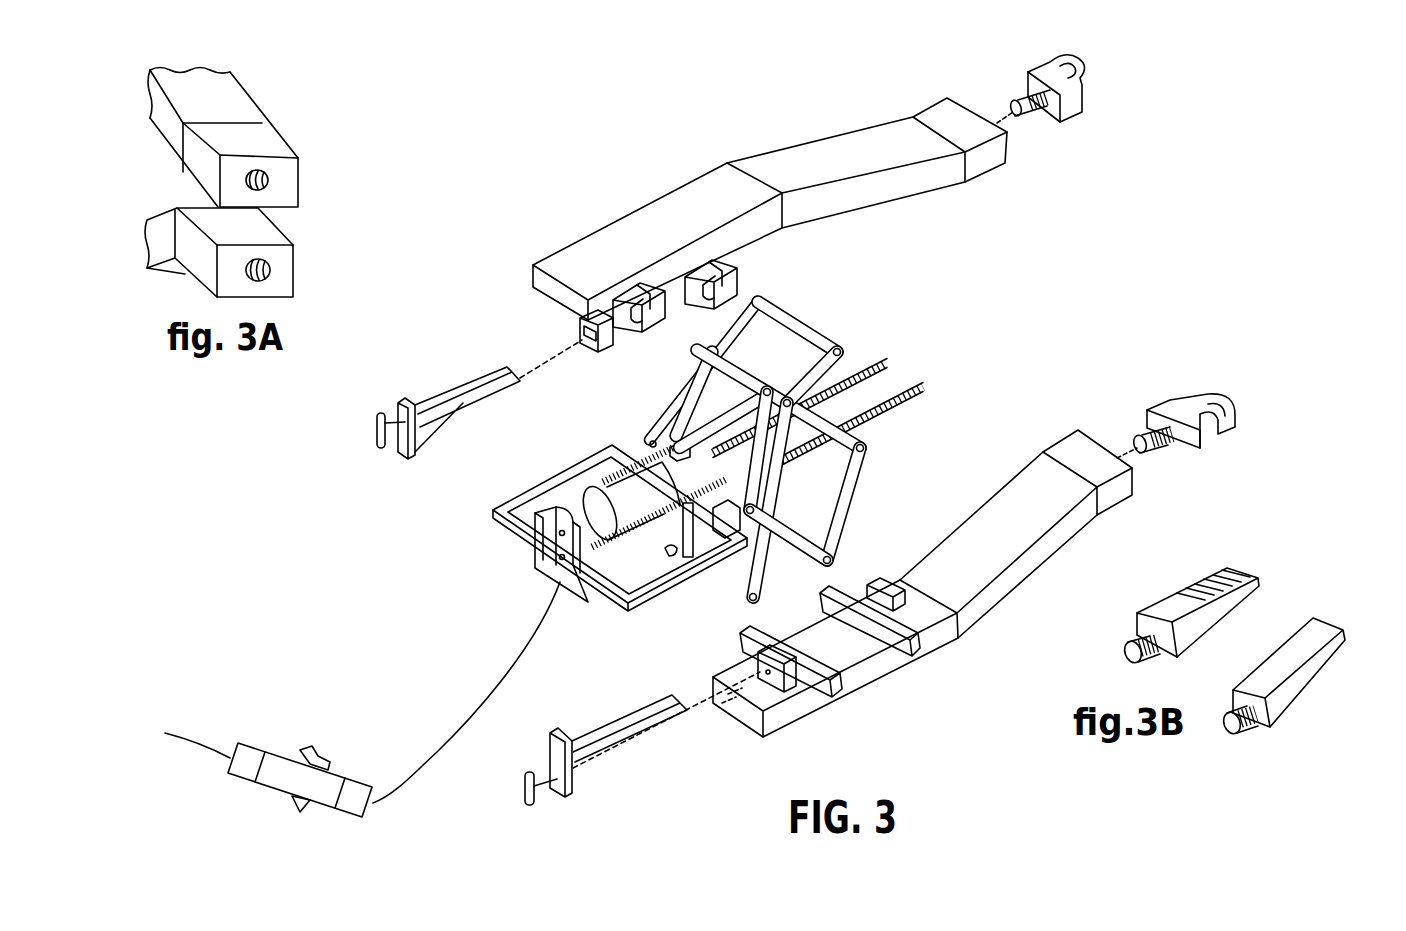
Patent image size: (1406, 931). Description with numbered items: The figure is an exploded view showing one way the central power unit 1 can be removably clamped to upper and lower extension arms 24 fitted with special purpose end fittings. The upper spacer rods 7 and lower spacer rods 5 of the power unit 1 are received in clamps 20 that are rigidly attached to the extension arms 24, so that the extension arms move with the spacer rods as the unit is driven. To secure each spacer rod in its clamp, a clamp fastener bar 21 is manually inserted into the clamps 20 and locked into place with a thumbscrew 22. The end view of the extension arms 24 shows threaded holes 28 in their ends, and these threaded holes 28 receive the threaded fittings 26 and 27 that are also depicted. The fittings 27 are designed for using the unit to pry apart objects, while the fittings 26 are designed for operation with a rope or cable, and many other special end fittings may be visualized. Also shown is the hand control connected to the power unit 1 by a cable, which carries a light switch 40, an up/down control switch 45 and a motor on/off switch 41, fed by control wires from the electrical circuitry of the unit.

In FIG. 3, the power unit 1 is at (507, 553).
In FIG. 3, the lower spacer rods 5 is at (722, 562).
In FIG. 3, the upper spacer rods 7 is at (810, 337).
In FIG. 3, the clamps 20 is at (625, 314).
In FIG. 3, the clamp fastener bars 21 is at (413, 453).
In FIG. 3, the thumbscrews 22 is at (377, 435).
In FIG. 3A, the extension arms 24 is at (188, 250).
In FIG. 3, the extension arms 24 is at (677, 212).
In FIG. 3, the threaded fittings 26 is at (1078, 110).
In FIG. 3B, the threaded fittings 27 is at (1307, 645).
In FIG. 3A, the threaded holes 28 is at (268, 258).
In FIG. 3, the light switch 40 is at (293, 760).
In FIG. 3, the motor on/off switch 41 is at (295, 800).
In FIG. 3, the up/down control switch 45 is at (325, 770).